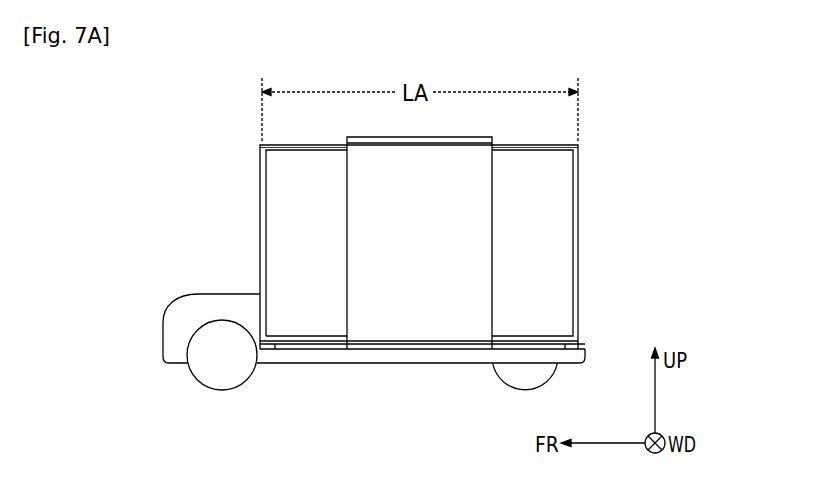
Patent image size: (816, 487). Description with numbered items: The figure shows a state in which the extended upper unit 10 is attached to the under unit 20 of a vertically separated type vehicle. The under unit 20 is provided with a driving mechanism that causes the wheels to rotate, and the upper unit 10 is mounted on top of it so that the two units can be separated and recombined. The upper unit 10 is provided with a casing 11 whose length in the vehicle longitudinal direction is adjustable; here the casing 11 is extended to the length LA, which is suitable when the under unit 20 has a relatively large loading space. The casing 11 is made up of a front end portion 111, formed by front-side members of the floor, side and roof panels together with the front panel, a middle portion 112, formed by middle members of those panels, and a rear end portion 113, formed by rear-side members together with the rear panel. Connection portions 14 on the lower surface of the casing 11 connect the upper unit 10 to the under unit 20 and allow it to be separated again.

The upper unit 10 is at (575, 220).
The casing 11 is at (258, 194).
The front end portion 111 is at (315, 150).
The middle portion 112 is at (446, 150).
The rear end portion 113 is at (531, 158).
The connection portions 14 is at (586, 350).
The under unit 20 is at (221, 293).